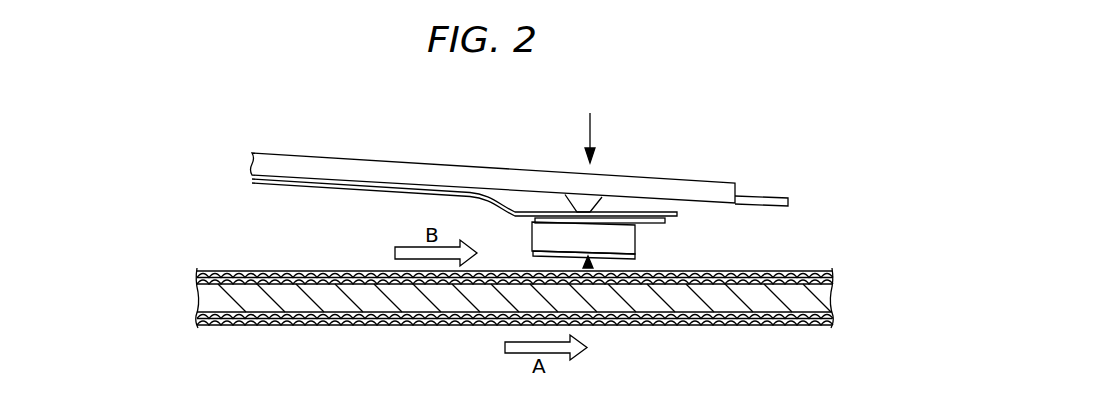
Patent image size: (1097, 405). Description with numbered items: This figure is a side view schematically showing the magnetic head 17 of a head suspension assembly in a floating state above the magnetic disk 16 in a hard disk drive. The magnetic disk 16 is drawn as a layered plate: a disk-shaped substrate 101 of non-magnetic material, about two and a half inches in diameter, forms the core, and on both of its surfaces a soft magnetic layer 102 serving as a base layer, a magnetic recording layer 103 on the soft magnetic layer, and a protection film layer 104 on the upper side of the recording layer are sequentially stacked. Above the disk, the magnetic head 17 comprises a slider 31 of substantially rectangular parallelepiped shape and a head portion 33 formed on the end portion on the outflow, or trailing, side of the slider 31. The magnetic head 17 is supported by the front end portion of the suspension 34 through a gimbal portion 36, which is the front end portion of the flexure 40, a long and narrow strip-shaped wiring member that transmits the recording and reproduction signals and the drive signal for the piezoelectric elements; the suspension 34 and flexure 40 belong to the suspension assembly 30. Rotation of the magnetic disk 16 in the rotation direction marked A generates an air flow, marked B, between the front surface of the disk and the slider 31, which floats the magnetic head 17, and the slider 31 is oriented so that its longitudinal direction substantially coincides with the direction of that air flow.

The suspension assembly 30 is at (443, 150).
The suspension 34 is at (338, 169).
The gimbal portion 36 is at (531, 190).
The flexure 40 is at (302, 187).
The slider 31 is at (600, 237).
The head portion 33 is at (625, 240).
The magnetic disk 16 is at (231, 238).
The substrate 101 is at (295, 307).
The soft magnetic layer 102 is at (197, 286).
The magnetic recording layer 103 is at (262, 272).
The protection film layer 104 is at (212, 272).
The magnetic head 17 is at (588, 268).